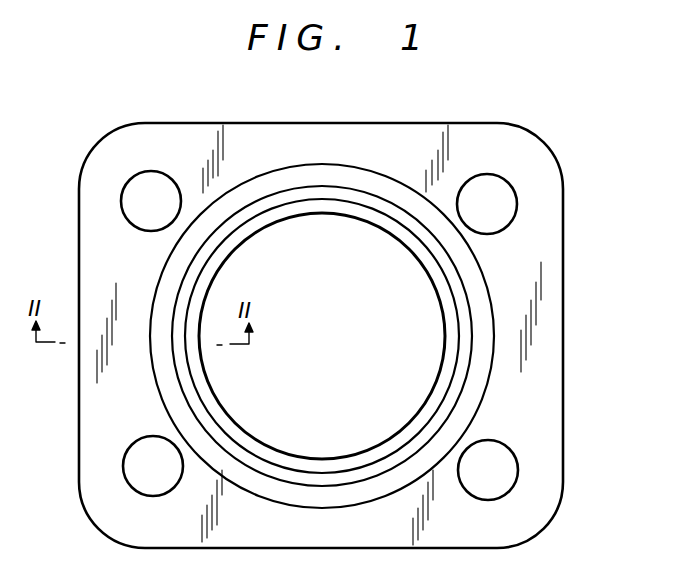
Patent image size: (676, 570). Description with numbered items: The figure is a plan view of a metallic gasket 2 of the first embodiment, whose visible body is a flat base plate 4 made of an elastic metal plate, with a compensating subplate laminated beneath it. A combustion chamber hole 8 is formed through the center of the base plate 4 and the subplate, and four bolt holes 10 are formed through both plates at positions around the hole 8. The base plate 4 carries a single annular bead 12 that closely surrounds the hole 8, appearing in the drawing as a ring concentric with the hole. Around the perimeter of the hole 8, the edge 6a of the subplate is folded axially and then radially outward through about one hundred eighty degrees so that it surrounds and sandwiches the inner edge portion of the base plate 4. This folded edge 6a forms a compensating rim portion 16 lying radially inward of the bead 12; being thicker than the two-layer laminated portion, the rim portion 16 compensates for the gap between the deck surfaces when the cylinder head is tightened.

The metallic gasket 2 is at (492, 116).
The base plate 4 is at (108, 407).
The edge of the subplate 6a is at (445, 318).
The combustion chamber hole 8 is at (332, 301).
The bolt holes 10 is at (142, 188).
The annular bead 12 is at (480, 350).
The compensating rim portion 16 is at (265, 462).